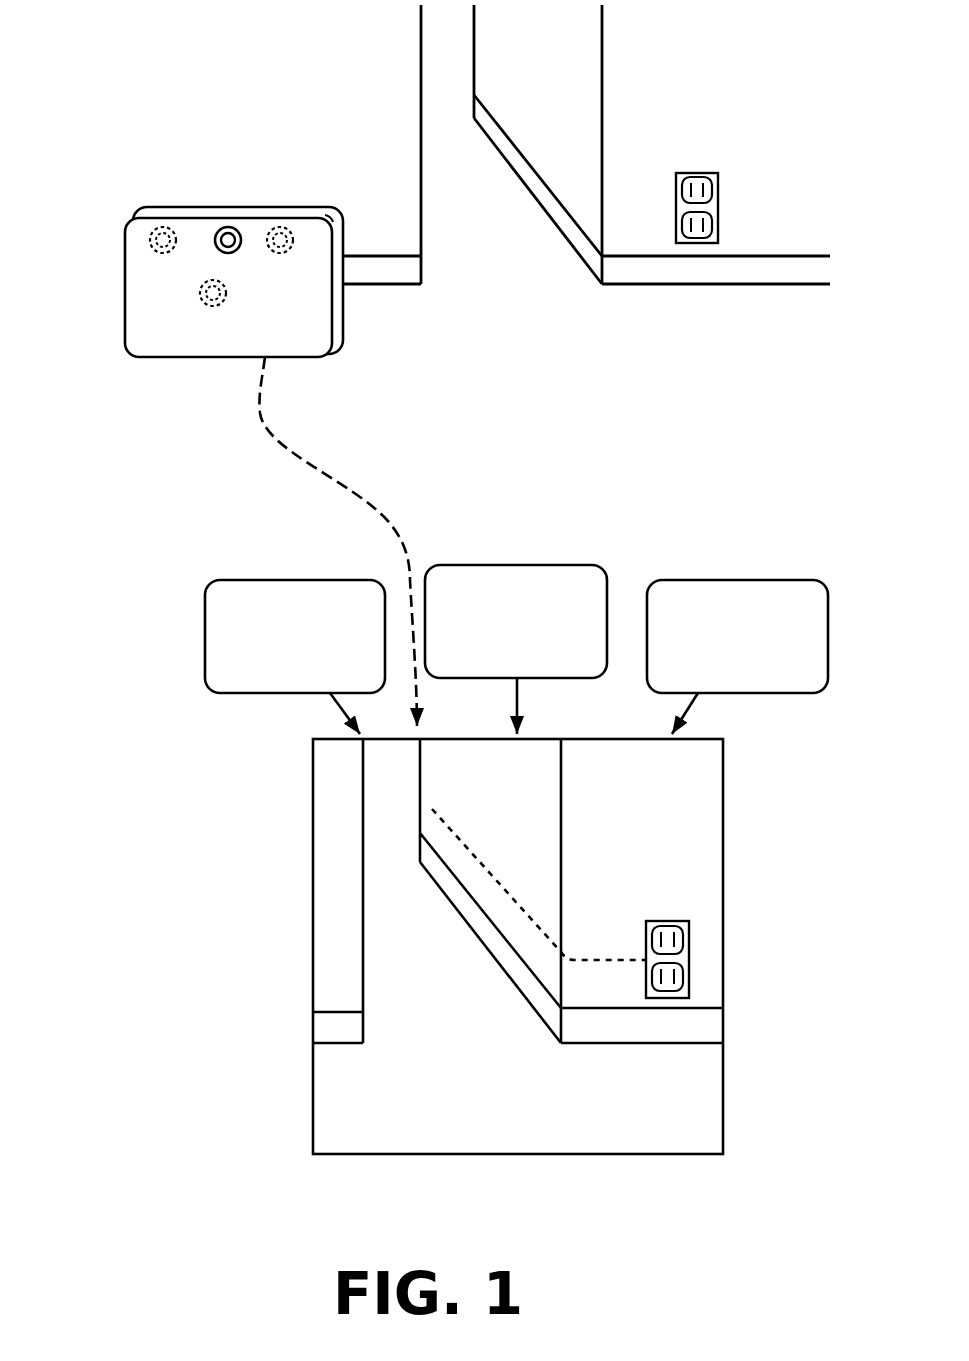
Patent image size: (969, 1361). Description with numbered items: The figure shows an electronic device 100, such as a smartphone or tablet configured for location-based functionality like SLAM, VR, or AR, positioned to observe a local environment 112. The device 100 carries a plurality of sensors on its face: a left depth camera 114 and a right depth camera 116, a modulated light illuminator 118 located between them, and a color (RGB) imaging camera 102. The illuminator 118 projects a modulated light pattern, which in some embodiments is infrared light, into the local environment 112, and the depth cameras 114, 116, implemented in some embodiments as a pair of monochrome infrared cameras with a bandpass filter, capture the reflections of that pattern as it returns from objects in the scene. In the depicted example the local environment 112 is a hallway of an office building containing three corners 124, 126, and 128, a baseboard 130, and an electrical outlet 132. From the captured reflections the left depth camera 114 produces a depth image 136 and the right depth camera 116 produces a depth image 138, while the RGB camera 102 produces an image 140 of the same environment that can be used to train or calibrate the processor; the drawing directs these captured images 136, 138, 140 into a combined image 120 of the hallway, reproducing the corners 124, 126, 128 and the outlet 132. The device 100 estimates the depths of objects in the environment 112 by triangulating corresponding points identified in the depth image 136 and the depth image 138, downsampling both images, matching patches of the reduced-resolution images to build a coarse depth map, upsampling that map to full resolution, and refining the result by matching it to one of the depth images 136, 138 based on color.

The electronic device 100 is at (112, 268).
The color (RGB) imaging camera 102 is at (227, 295).
The local environment 112 is at (571, 525).
The left depth camera 114 is at (157, 229).
The right depth camera 116 is at (291, 232).
The modulated light illuminator 118 is at (239, 232).
The composite image 120 is at (509, 1133).
The corner 124 is at (421, 237).
The corner 126 is at (602, 93).
The corner 128 is at (474, 50).
The baseboard 130 is at (581, 231).
The electrical outlet 132 is at (718, 203).
The depth image from left depth camera 136 is at (297, 580).
The depth image from right depth camera 138 is at (516, 565).
The image from RGB camera 140 is at (736, 580).